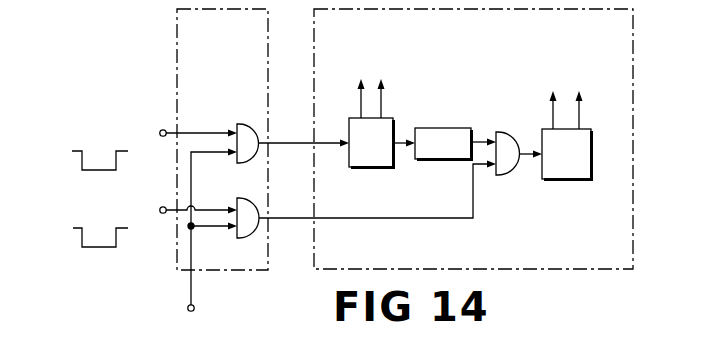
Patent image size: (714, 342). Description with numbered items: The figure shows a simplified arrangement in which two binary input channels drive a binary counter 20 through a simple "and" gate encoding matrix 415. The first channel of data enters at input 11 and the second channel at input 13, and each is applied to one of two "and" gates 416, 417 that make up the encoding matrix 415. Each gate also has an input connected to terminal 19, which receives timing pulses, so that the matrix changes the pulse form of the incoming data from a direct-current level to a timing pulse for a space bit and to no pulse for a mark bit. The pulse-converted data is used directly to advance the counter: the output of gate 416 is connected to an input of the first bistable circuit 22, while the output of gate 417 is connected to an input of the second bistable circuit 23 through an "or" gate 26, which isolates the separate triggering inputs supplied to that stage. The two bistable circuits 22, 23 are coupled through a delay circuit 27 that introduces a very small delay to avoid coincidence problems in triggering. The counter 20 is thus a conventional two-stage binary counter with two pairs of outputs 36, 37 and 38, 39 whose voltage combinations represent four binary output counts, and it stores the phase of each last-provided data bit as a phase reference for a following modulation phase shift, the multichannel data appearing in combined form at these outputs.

The channel I input 11 is at (161, 130).
The channel II input 13 is at (161, 207).
The terminal 19 is at (194, 306).
The encoding matrix 415 is at (238, 80).
The "and" gate 416 is at (244, 165).
The "and" gate 417 is at (246, 240).
The binary counter 20 is at (571, 261).
The bistable circuit 22 is at (368, 168).
The delay circuit 27 is at (436, 160).
The "or" gate 26 is at (507, 176).
The bistable circuit 23 is at (565, 180).
The output 36 is at (357, 107).
The output 37 is at (385, 107).
The output 38 is at (548, 115).
The output 39 is at (583, 115).